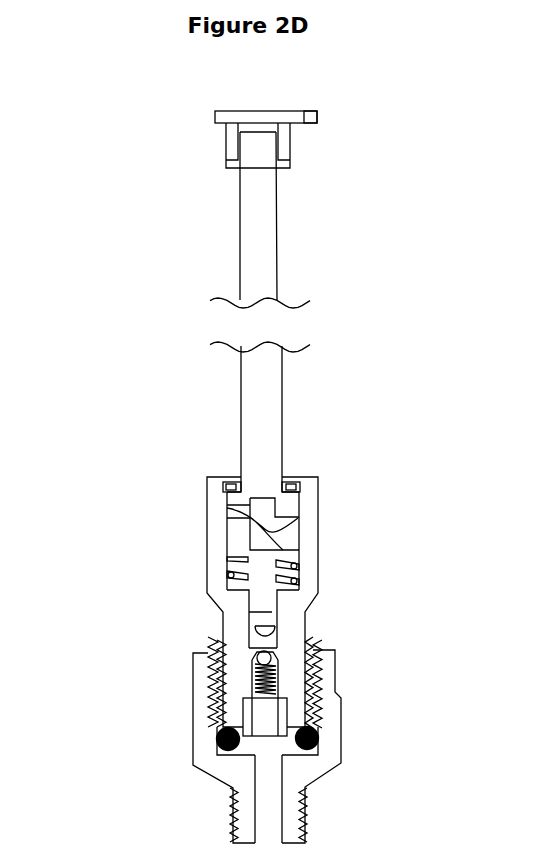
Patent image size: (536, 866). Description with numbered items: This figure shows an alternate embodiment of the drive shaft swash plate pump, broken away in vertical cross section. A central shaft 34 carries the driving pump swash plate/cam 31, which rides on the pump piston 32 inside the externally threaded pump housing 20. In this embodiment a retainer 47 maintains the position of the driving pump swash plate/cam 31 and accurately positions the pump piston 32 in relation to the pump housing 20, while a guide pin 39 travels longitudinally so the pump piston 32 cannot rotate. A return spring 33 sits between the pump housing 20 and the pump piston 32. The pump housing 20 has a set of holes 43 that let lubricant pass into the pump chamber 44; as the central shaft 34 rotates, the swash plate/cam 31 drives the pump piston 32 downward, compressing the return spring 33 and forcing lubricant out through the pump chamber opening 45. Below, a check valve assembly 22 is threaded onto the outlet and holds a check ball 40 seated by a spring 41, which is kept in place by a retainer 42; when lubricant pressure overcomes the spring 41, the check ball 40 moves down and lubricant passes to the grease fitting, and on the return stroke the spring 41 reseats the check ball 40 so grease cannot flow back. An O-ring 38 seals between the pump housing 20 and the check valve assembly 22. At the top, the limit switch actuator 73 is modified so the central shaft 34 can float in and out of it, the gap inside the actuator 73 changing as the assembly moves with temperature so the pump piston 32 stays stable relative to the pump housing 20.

The limit switch actuator 73 is at (297, 122).
The central shaft 34 is at (260, 250).
The retainer 47 is at (293, 480).
The pump housing 20 is at (307, 508).
The driving pump swash plate/cam 31 is at (258, 490).
The guide pin 39 is at (263, 547).
The return spring 33 is at (230, 573).
The pump piston 32 is at (272, 612).
The holes 43 is at (272, 630).
The pump chamber 44 is at (263, 643).
The check ball 40 is at (258, 656).
The spring 41 is at (255, 688).
The retainer 42 is at (276, 723).
The O-ring 38 is at (320, 739).
The check valve assembly 22 is at (235, 771).
The pump chamber opening 45 is at (265, 746).